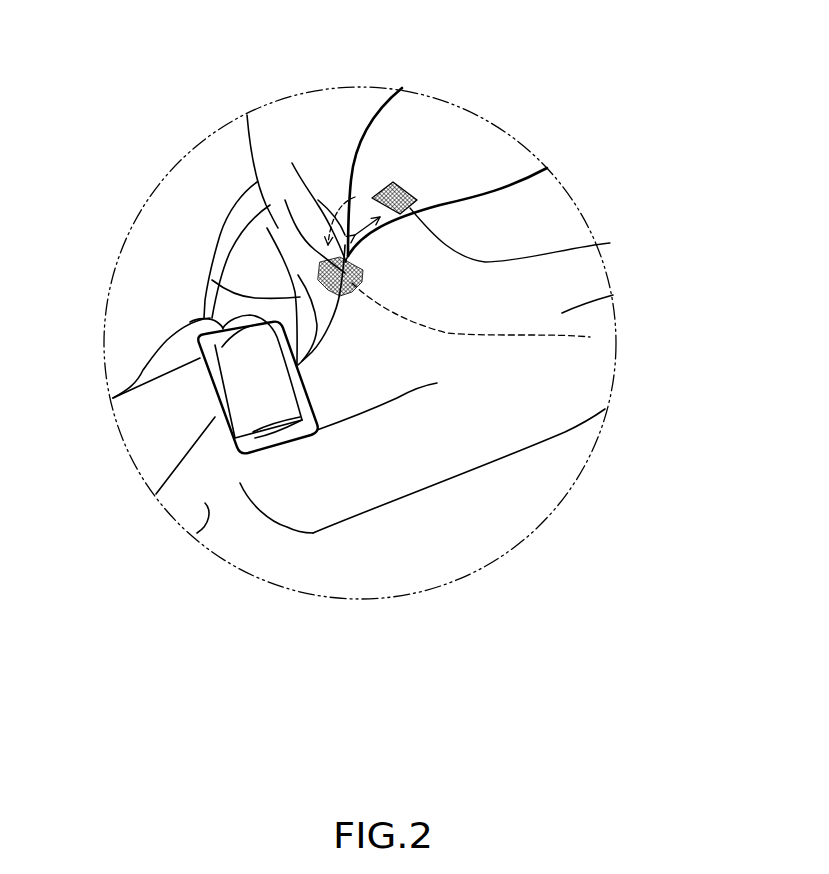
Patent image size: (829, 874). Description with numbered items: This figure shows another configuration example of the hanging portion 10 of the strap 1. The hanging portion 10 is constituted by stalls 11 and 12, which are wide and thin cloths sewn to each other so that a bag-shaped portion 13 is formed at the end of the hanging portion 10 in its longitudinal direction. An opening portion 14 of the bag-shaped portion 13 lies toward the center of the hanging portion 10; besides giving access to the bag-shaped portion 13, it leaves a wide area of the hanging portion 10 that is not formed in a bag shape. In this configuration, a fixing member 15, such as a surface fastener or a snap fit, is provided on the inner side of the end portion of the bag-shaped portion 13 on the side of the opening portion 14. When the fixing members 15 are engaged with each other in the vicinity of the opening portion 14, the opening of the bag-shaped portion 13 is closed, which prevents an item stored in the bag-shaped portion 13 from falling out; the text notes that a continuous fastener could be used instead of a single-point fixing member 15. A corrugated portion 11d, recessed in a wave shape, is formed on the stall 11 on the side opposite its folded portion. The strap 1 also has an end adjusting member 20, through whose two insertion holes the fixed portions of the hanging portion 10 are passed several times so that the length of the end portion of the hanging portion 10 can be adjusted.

The strap 1 is at (580, 171).
The hanging portion 10 is at (535, 458).
The stall 11 is at (268, 135).
The corrugated portion 11d is at (212, 280).
The stall 12 is at (417, 477).
The bag-shaped portion 13 is at (355, 196).
The opening portion 14 is at (397, 147).
The fixing member 15 is at (610, 243).
The end adjusting member 20 is at (297, 443).